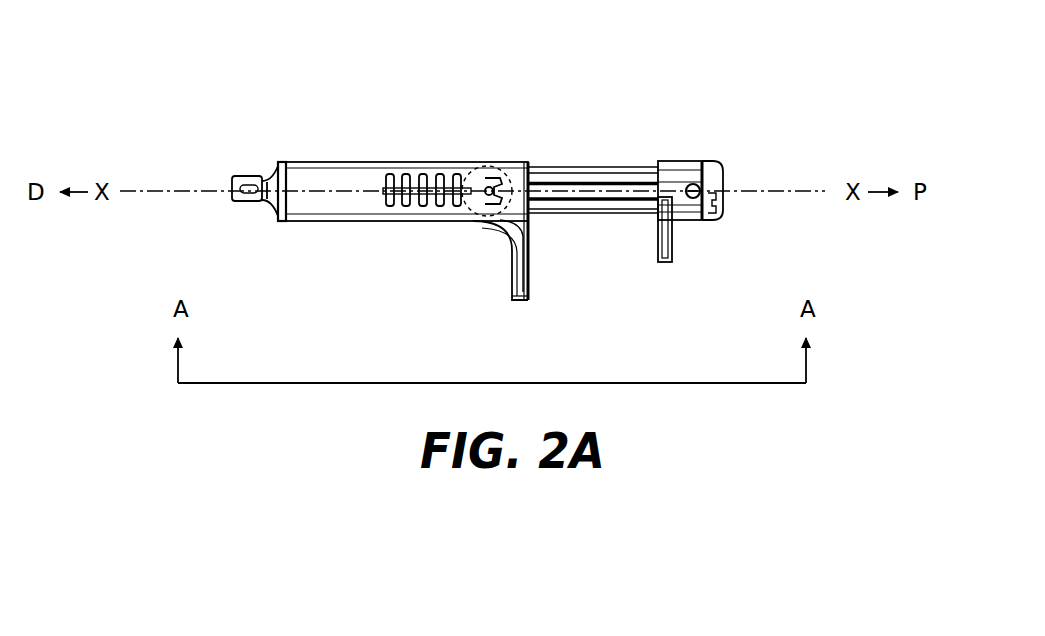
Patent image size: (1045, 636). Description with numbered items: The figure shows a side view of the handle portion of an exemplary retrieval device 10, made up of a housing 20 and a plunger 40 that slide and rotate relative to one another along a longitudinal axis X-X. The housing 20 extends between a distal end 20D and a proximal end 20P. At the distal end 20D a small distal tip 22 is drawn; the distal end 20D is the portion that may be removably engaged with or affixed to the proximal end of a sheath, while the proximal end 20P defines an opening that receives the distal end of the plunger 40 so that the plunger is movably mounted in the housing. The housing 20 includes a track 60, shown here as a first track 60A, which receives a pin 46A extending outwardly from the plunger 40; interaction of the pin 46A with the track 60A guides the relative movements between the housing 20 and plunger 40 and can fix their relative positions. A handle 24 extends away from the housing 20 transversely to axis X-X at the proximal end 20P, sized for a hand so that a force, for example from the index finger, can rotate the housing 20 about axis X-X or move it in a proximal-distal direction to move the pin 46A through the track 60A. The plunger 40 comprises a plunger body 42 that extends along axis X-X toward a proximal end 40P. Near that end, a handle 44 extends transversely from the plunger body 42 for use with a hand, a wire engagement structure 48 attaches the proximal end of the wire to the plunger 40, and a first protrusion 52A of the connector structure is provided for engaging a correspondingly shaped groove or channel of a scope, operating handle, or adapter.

The device 10 is at (270, 64).
The housing 20 is at (306, 236).
The distal end 20D is at (232, 178).
The proximal end 20P is at (528, 162).
The distal tip 22 is at (250, 203).
The handle 24 is at (512, 262).
The plunger 40 is at (684, 148).
The proximal end 40P is at (722, 180).
The plunger body 42 is at (600, 216).
The handle 44 is at (672, 256).
The pin 46A is at (488, 165).
The wire engagement structure 48 is at (720, 208).
The first protrusion 52A is at (698, 185).
The track 60 is at (420, 140).
The first track 60A is at (403, 163).